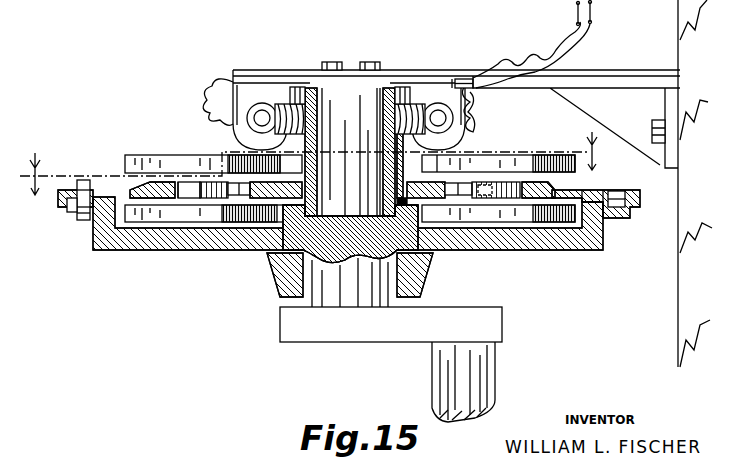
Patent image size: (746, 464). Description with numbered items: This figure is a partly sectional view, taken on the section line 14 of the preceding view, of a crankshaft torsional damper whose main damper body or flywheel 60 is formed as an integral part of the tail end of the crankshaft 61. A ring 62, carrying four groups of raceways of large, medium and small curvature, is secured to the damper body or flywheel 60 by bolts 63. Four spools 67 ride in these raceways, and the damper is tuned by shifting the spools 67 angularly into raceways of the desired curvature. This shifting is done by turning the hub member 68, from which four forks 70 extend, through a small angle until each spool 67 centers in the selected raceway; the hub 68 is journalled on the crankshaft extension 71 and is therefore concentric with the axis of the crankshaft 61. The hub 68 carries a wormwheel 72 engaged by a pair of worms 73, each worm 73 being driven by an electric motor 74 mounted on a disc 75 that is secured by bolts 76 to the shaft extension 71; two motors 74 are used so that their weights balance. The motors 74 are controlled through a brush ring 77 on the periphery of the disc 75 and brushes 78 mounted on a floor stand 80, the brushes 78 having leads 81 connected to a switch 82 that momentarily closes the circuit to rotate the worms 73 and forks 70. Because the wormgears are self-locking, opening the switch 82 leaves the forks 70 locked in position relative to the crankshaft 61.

The section line 14- 14 is at (313, 163).
The main damper body or flywheel 60 is at (605, 243).
The crankshaft 61 is at (494, 372).
The ring 62 is at (598, 195).
The bolts 63 is at (88, 182).
The spools 67 is at (175, 153).
The hub member 68 is at (413, 220).
The forks 70 is at (445, 200).
The crankshaft extension 71 is at (295, 222).
The wormwheel 72 is at (413, 100).
The worms 73 is at (258, 104).
The electric motor 74 is at (240, 137).
The disc 75 is at (267, 70).
The bolts 76 is at (338, 62).
The brush ring 77 is at (457, 78).
The brushes 78 is at (470, 78).
The floor stand 80 is at (578, 72).
The leads 81 is at (560, 35).
The switch 82 is at (592, 13).